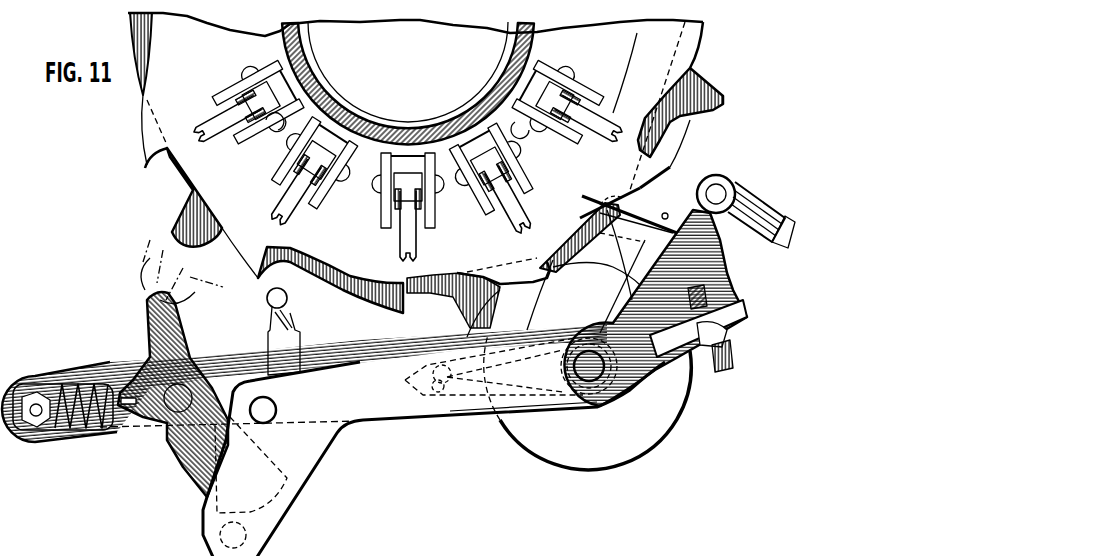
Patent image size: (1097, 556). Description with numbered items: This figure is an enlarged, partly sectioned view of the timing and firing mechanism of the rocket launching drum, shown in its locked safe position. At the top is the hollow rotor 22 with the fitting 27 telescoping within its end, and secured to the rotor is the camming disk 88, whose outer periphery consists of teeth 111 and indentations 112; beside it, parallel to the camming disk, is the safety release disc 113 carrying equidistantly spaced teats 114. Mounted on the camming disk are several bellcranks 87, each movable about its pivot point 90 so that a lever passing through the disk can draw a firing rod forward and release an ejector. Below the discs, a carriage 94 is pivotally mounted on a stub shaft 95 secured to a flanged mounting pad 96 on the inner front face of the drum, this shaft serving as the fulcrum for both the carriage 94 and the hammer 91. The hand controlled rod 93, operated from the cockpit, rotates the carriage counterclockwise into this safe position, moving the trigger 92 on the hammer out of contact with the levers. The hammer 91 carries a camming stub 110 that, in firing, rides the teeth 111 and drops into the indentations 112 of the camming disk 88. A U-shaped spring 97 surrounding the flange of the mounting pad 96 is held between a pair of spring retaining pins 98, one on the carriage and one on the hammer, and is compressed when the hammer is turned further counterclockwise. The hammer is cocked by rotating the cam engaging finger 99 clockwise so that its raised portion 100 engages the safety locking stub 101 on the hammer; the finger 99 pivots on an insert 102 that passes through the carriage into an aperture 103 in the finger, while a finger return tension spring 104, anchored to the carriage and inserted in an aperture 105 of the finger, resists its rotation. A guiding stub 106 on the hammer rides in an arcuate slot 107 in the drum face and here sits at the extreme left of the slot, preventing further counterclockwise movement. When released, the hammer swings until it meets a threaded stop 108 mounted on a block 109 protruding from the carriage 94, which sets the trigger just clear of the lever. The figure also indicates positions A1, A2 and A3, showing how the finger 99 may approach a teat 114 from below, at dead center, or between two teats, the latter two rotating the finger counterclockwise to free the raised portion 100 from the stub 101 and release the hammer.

The hollow rotor 22 is at (333, 113).
The fitting 27 is at (471, 95).
The camming disk 88 is at (195, 62).
The bellcrank 87 is at (210, 137).
The pivot point 90 is at (273, 130).
The teats 114 is at (723, 100).
The indentations 112 is at (665, 136).
The safety release disc 113 is at (657, 146).
The teeth 111 is at (665, 169).
The guiding stub 106 is at (640, 194).
The arcuate slot 107 is at (671, 209).
The hand controlled rod 93 is at (758, 212).
The block 109 is at (740, 309).
The threaded stop 108 is at (735, 357).
The carriage 94 is at (242, 356).
The finger return tension spring 104 is at (85, 383).
The cam engaging finger 99 is at (197, 465).
The insert 102 is at (196, 378).
The aperture 105 is at (141, 412).
The aperture 103 is at (167, 432).
The trigger 92 is at (291, 322).
The camming stub 110 is at (278, 409).
The hammer 91 is at (293, 490).
The raised portion 100 is at (283, 505).
The safety locking stub 101 is at (258, 540).
The stub shaft 95 is at (578, 350).
The flanged mounting pad 96 is at (630, 440).
The spring retaining pins 98 is at (412, 380).
The U-shaped spring 97 is at (548, 390).
The position A1 is at (148, 273).
The position A2 is at (152, 294).
The position A3 is at (160, 312).